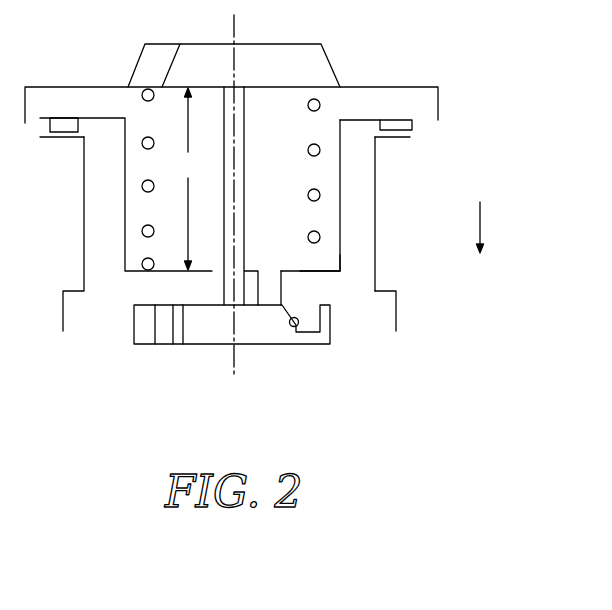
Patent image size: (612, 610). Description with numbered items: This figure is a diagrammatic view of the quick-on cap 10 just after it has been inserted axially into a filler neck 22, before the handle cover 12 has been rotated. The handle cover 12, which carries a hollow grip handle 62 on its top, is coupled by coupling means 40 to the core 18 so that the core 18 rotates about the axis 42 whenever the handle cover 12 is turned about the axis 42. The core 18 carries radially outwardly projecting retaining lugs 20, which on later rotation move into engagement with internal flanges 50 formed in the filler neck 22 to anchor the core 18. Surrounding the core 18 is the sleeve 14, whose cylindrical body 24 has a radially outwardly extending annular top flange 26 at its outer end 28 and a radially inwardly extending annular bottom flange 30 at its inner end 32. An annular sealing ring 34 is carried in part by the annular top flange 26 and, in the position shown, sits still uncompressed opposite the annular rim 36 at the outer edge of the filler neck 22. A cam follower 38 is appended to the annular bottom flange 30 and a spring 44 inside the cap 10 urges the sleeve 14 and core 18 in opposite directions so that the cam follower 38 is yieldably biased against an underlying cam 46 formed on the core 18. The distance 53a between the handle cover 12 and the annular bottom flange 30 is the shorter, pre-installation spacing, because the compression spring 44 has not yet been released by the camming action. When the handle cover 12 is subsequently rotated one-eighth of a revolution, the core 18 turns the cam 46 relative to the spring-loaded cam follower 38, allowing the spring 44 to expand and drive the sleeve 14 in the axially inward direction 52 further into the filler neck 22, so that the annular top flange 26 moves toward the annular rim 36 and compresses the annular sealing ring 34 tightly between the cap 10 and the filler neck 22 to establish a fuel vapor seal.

The quick-on cap 10 is at (425, 66).
The handle cover 12 is at (343, 64).
The sleeve 14 is at (344, 234).
The core 18 is at (204, 352).
The retaining lugs 20 is at (165, 337).
The filler neck 22 is at (360, 320).
The cylindrical body 24 is at (340, 190).
The annular top flange 26 is at (361, 120).
The outer end 28 is at (414, 105).
The annular bottom flange 30 is at (299, 270).
The inner end 32 is at (352, 276).
The annular sealing ring 34 is at (62, 126).
The annular rim 36 is at (46, 170).
The cam follower 38 is at (282, 286).
The coupling means 40 is at (268, 207).
The axis 42 is at (235, 25).
The spring 44 is at (150, 191).
The cam 46 is at (297, 321).
The internal flanges 50 is at (78, 291).
The axially inward direction 52 is at (480, 225).
The distance 53a is at (191, 179).
The grip handle 62 is at (163, 43).